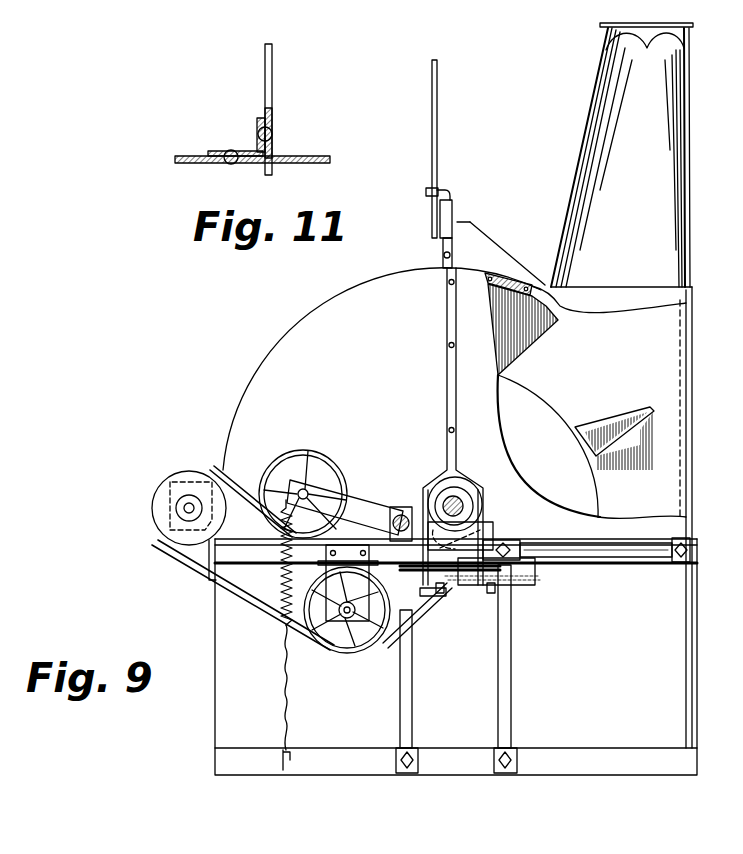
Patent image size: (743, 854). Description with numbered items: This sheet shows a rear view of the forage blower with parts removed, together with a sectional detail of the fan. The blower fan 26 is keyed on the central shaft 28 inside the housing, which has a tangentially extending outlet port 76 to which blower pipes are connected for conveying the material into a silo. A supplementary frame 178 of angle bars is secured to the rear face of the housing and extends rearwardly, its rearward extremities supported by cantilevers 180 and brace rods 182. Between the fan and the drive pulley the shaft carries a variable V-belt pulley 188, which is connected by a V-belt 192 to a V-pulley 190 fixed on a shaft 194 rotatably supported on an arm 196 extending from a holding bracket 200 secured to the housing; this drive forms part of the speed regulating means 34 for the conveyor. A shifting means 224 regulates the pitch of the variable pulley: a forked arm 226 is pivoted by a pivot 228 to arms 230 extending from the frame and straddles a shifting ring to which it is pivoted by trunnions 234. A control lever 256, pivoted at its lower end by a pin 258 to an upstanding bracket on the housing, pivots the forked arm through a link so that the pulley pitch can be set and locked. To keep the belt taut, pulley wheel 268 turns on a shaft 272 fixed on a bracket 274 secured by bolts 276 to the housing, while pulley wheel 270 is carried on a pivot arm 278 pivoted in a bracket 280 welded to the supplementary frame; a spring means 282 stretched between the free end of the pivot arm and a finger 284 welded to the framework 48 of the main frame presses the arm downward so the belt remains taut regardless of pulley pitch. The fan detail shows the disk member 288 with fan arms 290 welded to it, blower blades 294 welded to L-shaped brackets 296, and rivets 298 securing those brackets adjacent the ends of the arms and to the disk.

In FIG. 9, the blower fan 26 is at (673, 440).
In FIG. 9, the central shaft 28 is at (456, 506).
In FIG. 9, the speed regulating means 34 is at (321, 383).
In FIG. 9, the framework 48 is at (212, 762).
In FIG. 9, the outlet port 76 is at (688, 64).
In FIG. 9, the supplementary frame 178 is at (524, 577).
In FIG. 9, the cantilevers 180 is at (412, 702).
In FIG. 9, the brace rods 182 is at (614, 560).
In FIG. 9, the variable V-belt pulley 188 is at (440, 452).
In FIG. 9, the V-pulley 190 is at (166, 484).
In FIG. 9, the V-belt 192 is at (270, 482).
In FIG. 9, the shaft 194 is at (186, 505).
In FIG. 9, the arm 196 is at (170, 520).
In FIG. 9, the holding bracket 200 is at (212, 578).
In FIG. 9, the shifting means 224 is at (480, 184).
In FIG. 9, the forked arm 226 is at (446, 322).
In FIG. 9, the pivot 228 is at (480, 590).
In FIG. 9, the arms 230 is at (440, 596).
In FIG. 9, the trunnions 234 is at (484, 510).
In FIG. 9, the control lever 256 is at (437, 138).
In FIG. 9, the pin 258 is at (440, 232).
In FIG. 9, the pulley wheel 268 is at (336, 646).
In FIG. 9, the pulley wheel 270 is at (308, 456).
In FIG. 9, the shaft 272 is at (350, 650).
In FIG. 9, the bracket 274 is at (337, 570).
In FIG. 9, the bolts 276 is at (326, 552).
In FIG. 9, the pivot arm 278 is at (356, 500).
In FIG. 9, the bracket 280 is at (402, 512).
In FIG. 9, the spring means 282 is at (286, 625).
In FIG. 9, the finger 284 is at (292, 755).
In FIG. 11, the disk member 288 is at (318, 163).
In FIG. 11, the fan arms 290 is at (280, 148).
In FIG. 11, the blower blades 294 is at (272, 88).
In FIG. 11, the L-shaped brackets 296 is at (218, 150).
In FIG. 11, the rivets 298 is at (275, 135).